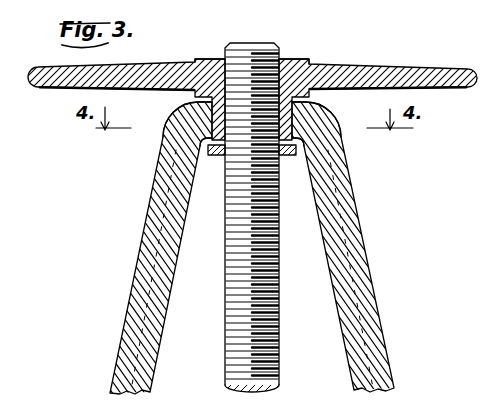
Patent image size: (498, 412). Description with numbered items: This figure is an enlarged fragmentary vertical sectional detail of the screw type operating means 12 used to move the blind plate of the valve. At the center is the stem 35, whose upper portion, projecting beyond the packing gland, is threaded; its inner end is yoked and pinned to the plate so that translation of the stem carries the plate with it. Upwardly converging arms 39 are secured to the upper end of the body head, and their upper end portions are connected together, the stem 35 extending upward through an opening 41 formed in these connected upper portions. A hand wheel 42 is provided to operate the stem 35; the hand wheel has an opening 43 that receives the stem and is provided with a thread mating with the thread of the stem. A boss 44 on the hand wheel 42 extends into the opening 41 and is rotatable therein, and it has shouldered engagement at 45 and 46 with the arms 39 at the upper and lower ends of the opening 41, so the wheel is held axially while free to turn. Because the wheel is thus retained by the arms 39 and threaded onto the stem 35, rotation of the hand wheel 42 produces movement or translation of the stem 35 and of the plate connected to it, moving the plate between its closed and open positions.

The means for operating the plate 12 is at (339, 63).
The stem 35 is at (244, 212).
The arms 39 is at (165, 180).
The opening 41 is at (303, 116).
The hand wheel 42 is at (366, 70).
The opening 43 is at (228, 61).
The boss 44 is at (214, 157).
The shouldered engagement 45 is at (205, 104).
The shouldered engagement 46 is at (206, 137).